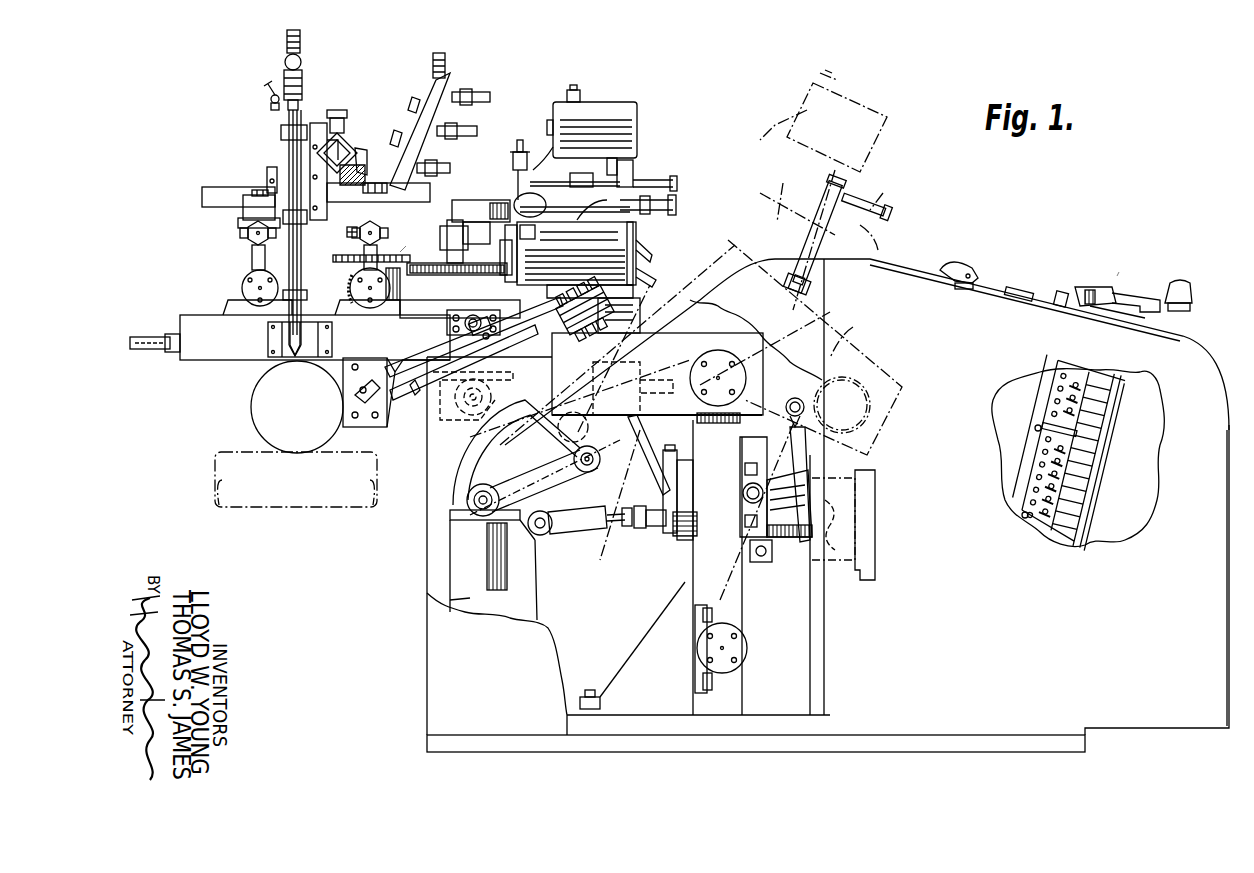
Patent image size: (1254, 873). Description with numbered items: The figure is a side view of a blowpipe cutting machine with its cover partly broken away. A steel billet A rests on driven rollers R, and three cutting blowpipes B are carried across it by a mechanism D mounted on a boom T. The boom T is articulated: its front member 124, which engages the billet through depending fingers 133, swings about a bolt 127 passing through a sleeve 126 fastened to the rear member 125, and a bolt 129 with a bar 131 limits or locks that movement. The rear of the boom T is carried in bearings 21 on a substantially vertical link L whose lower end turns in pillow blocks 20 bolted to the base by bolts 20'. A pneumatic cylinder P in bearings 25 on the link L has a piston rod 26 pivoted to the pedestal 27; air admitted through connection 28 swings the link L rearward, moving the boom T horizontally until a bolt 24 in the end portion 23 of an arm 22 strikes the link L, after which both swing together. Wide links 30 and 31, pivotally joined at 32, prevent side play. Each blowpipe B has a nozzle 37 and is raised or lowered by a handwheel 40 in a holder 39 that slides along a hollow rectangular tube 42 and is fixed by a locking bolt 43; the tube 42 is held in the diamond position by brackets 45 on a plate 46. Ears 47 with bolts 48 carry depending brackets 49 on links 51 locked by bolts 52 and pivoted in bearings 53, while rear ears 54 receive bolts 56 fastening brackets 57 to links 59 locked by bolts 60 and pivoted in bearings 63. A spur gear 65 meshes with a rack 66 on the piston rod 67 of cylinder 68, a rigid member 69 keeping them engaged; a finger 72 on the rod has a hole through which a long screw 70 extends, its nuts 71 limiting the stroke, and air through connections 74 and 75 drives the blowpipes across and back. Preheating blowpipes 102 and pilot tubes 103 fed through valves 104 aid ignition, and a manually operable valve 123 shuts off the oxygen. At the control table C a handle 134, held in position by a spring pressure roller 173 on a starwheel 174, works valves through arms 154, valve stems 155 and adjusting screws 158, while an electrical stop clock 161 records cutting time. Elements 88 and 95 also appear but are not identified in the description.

The pillow blocks 20 is at (743, 649).
The bolts 20' is at (734, 686).
The bearings 21 is at (700, 400).
The arm 22 is at (633, 462).
The end portion 23 is at (662, 535).
The bolt 24 is at (628, 530).
The bearings 25 is at (745, 490).
The piston rod 26 is at (575, 522).
The pedestal 27 is at (520, 592).
The connection 28 is at (810, 402).
The wide link 30 is at (590, 362).
The second wide link 31 is at (515, 478).
The pivot connection 32 is at (597, 455).
The nozzle 37 is at (285, 340).
The holder 39 is at (315, 125).
The handwheel 40 is at (272, 167).
The hollow rectangular tube 42 is at (348, 145).
The locking bolt 43 is at (338, 110).
The brackets 45 is at (370, 140).
The plate 46 is at (210, 195).
The ear 47 is at (245, 210).
The bolt 48 is at (255, 188).
The depending bracket 49 is at (245, 222).
The link 51 is at (250, 259).
The bolt 52 is at (246, 236).
The bearings 53 is at (243, 287).
The ears 54 is at (430, 190).
The bolt 56 is at (380, 183).
The bracket 57 is at (347, 230).
The link 59 is at (345, 257).
The bolt 60 is at (356, 238).
The bearings 63 is at (375, 297).
The spur gear 65 is at (350, 292).
The rack 66 is at (350, 272).
The piston rod 67 is at (467, 222).
The cylinder 68 is at (625, 237).
The rigid member 69 is at (420, 280).
The long screw 70 is at (470, 265).
The adjustable nuts 71 is at (450, 265).
The finger 72 is at (452, 236).
The connection 74 is at (673, 207).
The connection 75 is at (528, 232).
The tank 88 is at (615, 103).
The valve 95 is at (520, 145).
The preheating blowpipes 102 is at (352, 398).
The tube 103 is at (283, 106).
The valve 104 is at (300, 62).
The manually operable valve 123 is at (975, 262).
The front member 124 is at (195, 330).
The rear member 125 is at (690, 348).
The sleeve 126 is at (548, 240).
The bolt 127 is at (467, 207).
The bolt 129 is at (630, 180).
The bar 131 is at (673, 182).
The fingers 133 is at (352, 380).
The control handle 134 is at (1190, 298).
The arm 154 is at (1065, 425).
The valve stem 155 is at (1090, 440).
The adjustable screw 158 is at (1075, 370).
The electrical stop clock 161 is at (1015, 288).
The spring pressure roller 173 is at (1108, 285).
The starwheel 174 is at (1063, 293).
The billet A is at (250, 407).
The cutting blowpipes B is at (282, 138).
The control table C is at (1118, 275).
The mechanism D is at (398, 250).
The link L is at (740, 600).
The pneumatic cylinder P is at (785, 535).
The driven rollers R is at (295, 507).
The boom T is at (205, 360).